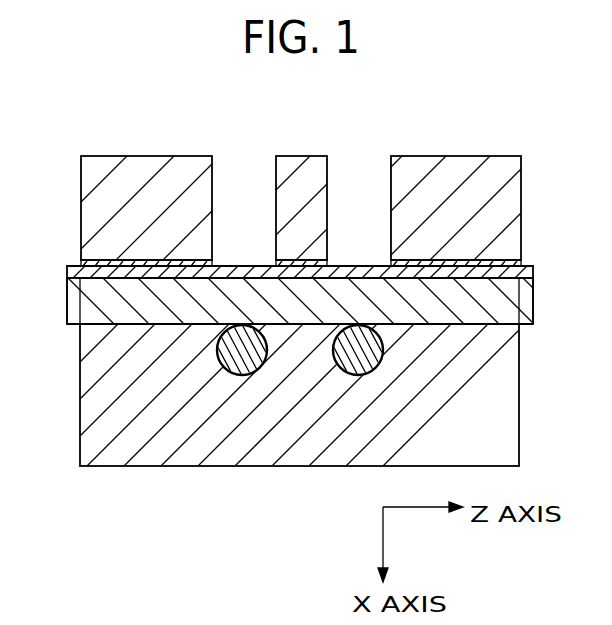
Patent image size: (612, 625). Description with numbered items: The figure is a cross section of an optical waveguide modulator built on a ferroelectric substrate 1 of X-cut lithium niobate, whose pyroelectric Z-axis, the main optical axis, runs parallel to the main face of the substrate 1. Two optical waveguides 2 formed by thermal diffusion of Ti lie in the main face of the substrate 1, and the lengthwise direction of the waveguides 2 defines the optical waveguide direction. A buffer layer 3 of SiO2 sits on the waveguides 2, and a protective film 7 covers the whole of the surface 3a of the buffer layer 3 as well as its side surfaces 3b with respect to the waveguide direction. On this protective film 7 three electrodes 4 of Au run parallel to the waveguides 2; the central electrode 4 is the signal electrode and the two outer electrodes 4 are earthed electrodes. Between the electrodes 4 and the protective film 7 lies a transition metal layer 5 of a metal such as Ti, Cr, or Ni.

The ferroelectric substrate 1 is at (500, 352).
The optical waveguide 2 is at (247, 335).
The buffer layer 3 is at (105, 287).
The surface of the buffer layer 3a is at (242, 287).
The side surface of the buffer layer 3b is at (86, 327).
The electrode 4 is at (140, 173).
The transition metal layer 5 is at (82, 263).
The protective film 7 is at (92, 274).